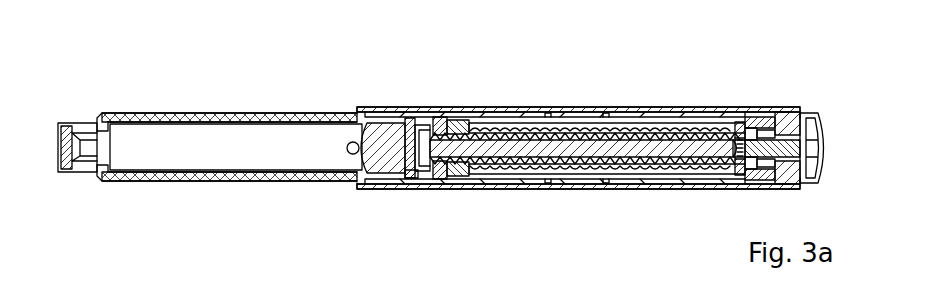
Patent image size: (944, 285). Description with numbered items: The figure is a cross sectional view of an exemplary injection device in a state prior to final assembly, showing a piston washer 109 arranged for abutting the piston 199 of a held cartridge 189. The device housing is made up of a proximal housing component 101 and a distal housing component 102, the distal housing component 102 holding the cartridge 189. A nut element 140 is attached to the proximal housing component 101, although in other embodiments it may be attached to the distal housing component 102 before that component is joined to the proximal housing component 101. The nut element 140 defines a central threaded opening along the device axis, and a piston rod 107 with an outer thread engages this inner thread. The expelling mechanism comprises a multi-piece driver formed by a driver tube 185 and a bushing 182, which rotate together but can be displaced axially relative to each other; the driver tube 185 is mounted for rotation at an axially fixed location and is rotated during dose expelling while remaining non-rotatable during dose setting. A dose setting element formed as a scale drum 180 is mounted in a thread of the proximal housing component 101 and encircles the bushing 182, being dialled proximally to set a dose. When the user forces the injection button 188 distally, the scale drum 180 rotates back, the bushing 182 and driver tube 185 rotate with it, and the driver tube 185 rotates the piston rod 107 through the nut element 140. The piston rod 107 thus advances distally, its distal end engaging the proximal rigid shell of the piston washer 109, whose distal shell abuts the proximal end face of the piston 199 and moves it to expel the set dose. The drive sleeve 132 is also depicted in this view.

The proximal housing component 101 is at (611, 185).
The distal housing component 102 is at (155, 177).
The piston rod 107 is at (525, 147).
The piston washer 109 is at (416, 169).
The drive sleeve 132 is at (517, 123).
The nut element 140 is at (448, 125).
The scale drum 180 is at (633, 115).
The bushing 182 is at (705, 123).
The driver tube 185 is at (458, 132).
The injection button 188 is at (808, 132).
The cartridge 189 is at (271, 121).
The piston 199 is at (393, 142).